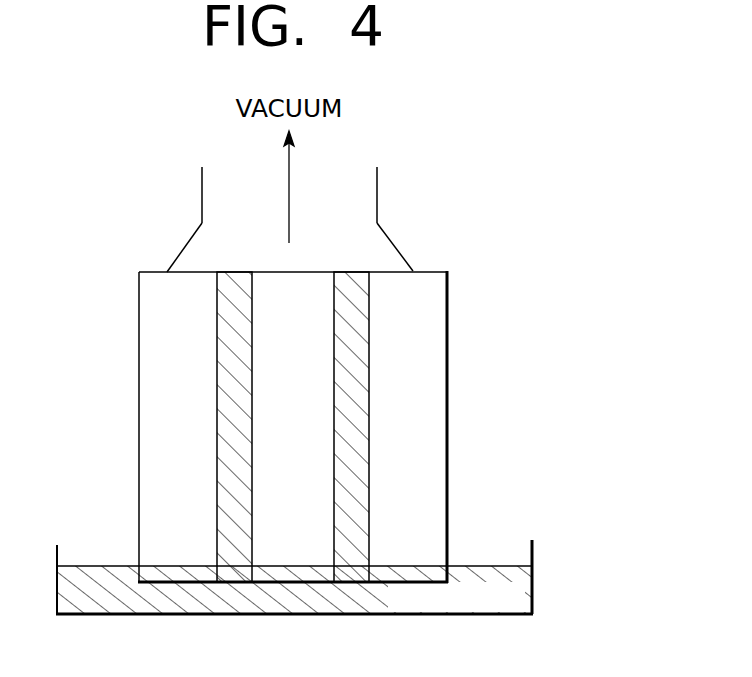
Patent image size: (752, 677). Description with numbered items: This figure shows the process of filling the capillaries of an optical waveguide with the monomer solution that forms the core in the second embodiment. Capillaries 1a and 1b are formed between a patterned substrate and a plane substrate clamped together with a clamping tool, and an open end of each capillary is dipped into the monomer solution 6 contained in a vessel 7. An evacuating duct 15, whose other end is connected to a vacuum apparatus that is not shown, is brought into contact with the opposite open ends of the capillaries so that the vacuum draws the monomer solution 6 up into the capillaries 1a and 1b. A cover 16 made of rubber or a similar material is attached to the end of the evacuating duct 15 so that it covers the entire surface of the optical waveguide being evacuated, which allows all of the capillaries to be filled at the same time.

The evacuating duct 15 is at (377, 192).
The cover 16 is at (398, 245).
The capillary 1a is at (216, 333).
The capillary 1b is at (369, 335).
The monomer solution 6 is at (475, 567).
The vessel 7 is at (527, 580).